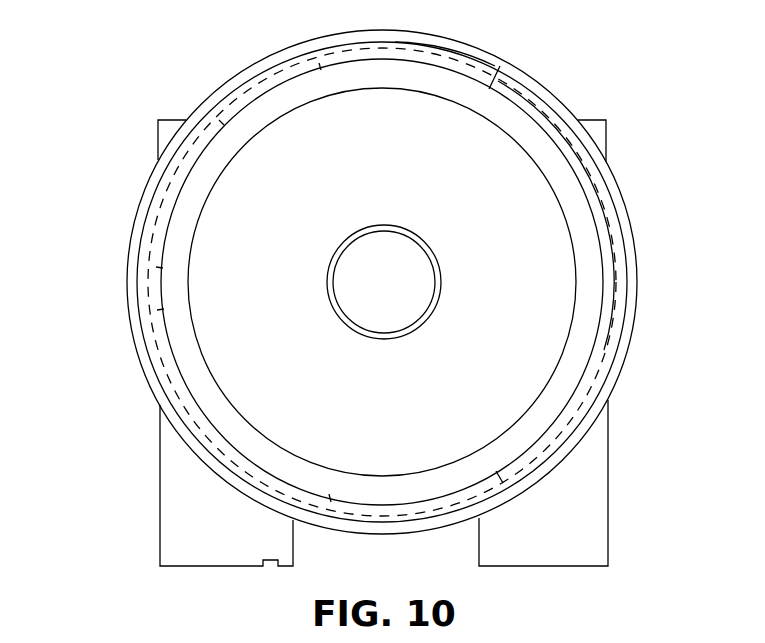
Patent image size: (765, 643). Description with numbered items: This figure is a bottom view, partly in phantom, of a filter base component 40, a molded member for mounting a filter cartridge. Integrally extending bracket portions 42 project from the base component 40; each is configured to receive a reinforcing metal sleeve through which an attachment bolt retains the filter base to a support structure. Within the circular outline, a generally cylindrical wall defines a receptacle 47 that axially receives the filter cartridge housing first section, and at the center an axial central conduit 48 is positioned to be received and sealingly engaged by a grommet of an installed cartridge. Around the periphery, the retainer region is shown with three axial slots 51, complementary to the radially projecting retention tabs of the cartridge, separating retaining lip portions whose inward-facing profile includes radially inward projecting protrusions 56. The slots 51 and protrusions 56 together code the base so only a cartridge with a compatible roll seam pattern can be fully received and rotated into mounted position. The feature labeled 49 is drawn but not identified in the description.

The base component 40 is at (98, 166).
The bracket portions 42 is at (175, 537).
The receptacle 47 is at (466, 409).
The axial central conduit 48 is at (330, 263).
The gap 49 is at (197, 330).
The axial slots 51 is at (258, 88).
The radially inward projecting protrusions 56 is at (530, 82).